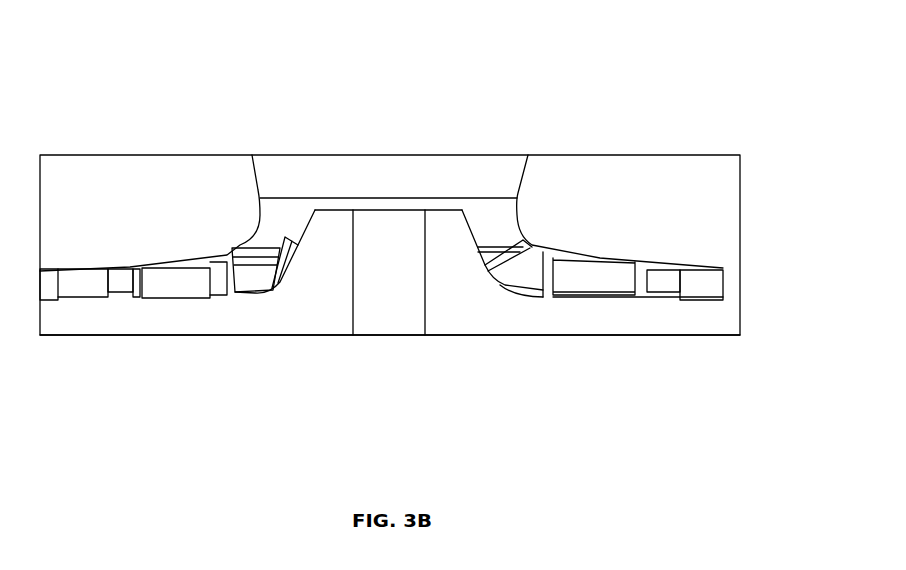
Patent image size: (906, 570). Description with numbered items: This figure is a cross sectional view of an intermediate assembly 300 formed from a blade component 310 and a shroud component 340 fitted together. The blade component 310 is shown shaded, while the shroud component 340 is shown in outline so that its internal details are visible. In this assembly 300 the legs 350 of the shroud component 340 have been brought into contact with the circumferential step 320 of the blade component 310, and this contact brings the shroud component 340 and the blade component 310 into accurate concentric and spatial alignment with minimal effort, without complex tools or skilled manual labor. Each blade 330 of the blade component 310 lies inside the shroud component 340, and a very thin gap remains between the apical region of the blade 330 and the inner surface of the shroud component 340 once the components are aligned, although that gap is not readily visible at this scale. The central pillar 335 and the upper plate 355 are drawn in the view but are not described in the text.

The intermediate assembly 300 is at (211, 83).
The blade component 310 is at (562, 356).
The circumferential step 320 is at (735, 302).
The blade 330 is at (133, 280).
The central pillar 335 is at (385, 283).
The shroud component 340 is at (609, 124).
The legs 350 is at (728, 287).
The upper plate 355 is at (387, 170).